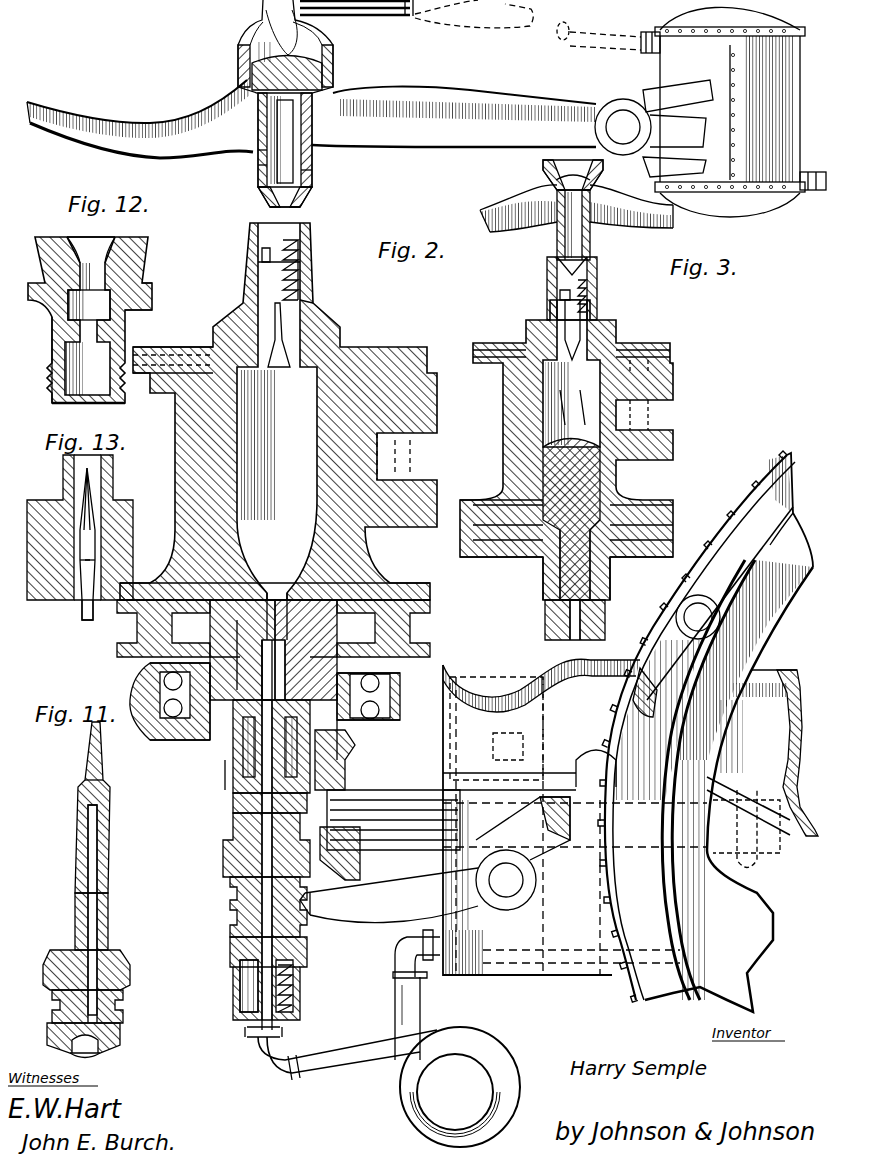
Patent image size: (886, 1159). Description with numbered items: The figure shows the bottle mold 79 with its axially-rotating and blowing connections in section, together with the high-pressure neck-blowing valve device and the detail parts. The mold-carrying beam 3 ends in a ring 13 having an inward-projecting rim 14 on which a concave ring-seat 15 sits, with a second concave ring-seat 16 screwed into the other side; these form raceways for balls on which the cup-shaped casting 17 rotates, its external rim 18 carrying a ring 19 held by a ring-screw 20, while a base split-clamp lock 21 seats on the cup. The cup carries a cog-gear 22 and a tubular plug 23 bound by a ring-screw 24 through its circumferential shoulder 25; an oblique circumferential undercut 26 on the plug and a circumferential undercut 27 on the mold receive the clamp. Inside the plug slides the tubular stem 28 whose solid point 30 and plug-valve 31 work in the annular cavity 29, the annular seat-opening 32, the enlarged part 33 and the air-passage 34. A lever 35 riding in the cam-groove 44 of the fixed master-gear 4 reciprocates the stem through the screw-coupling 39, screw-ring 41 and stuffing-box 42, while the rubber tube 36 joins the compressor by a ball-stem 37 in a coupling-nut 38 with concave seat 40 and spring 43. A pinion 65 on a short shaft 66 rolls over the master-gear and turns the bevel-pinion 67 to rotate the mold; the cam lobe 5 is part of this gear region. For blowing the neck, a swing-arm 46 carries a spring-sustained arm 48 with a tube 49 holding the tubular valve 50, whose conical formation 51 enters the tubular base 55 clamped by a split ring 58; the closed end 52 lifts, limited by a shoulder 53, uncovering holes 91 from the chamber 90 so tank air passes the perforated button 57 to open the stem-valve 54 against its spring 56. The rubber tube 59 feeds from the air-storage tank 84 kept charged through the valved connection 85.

In FIG. 2, the mold-carrying beam 3 is at (630, 817).
In FIG. 2, the master-gear 4 is at (740, 515).
In FIG. 2, the cam lobe 5 is at (791, 510).
In FIG. 2, the ring 13 is at (140, 695).
In FIG. 2, the inward-projecting rim 14 is at (185, 742).
In FIG. 2, the concave ring-seat 15 is at (150, 735).
In FIG. 2, the concave ring-seat 16 is at (150, 665).
In FIG. 2, the cup-shaped casting 17 is at (218, 768).
In FIG. 2, the external rim 18 is at (205, 755).
In FIG. 2, the ring 19 is at (160, 710).
In FIG. 2, the ring-screw 20 is at (160, 682).
In FIG. 2, the base split-clamp lock 21 is at (172, 628).
In FIG. 2, the cog-gear 22 is at (235, 775).
In FIG. 12, the tubular plug 23 is at (160, 230).
In FIG. 2, the tubular plug 23 is at (545, 582).
In FIG. 2, the ring-screw 24 is at (267, 757).
In FIG. 12, the circumferential shoulder 25 is at (150, 305).
In FIG. 2, the circumferential shoulder 25 is at (271, 643).
In FIG. 12, the oblique circumferential undercut 26 is at (152, 285).
In FIG. 2, the oblique circumferential undercut 26 is at (274, 655).
In FIG. 2, the circumferential undercut 27 is at (195, 590).
In FIG. 13, the tubular stem 28 is at (80, 598).
In FIG. 11, the tubular stem 28 is at (108, 905).
In FIG. 2, the tubular stem 28 is at (255, 830).
In FIG. 12, the annular cavity 29 is at (92, 250).
In FIG. 13, the solid point 30 is at (78, 540).
In FIG. 11, the solid point 30 is at (88, 745).
In FIG. 2, the solid point 30 is at (625, 575).
In FIG. 11, the plug-valve 31 is at (85, 783).
In FIG. 12, the annular seat-opening 32 is at (89, 305).
In FIG. 12, the enlarged part 33 is at (52, 325).
In FIG. 2, the enlarged part 33 is at (595, 580).
In FIG. 13, the air-passage 34 is at (80, 570).
In FIG. 11, the air-passage 34 is at (88, 810).
In FIG. 2, the air-passage 34 is at (275, 835).
In FIG. 2, the lever 35 is at (546, 715).
In FIG. 2, the rubber tube 36 is at (345, 1040).
In FIG. 2, the ball-stem 37 is at (232, 950).
In FIG. 2, the coupling-nut 38 is at (240, 995).
In FIG. 11, the screw-coupling 39 is at (123, 1017).
In FIG. 2, the screw-coupling 39 is at (230, 905).
In FIG. 11, the concave seat 40 is at (100, 1058).
In FIG. 2, the concave seat 40 is at (300, 958).
In FIG. 11, the screw-ring 41 is at (130, 972).
In FIG. 2, the screw-ring 41 is at (230, 858).
In FIG. 2, the stuffing-box 42 is at (240, 810).
In FIG. 2, the spring 43 is at (295, 985).
In FIG. 2, the cam-groove 44 is at (718, 858).
In FIG. 3, the swing-arm 46 is at (625, 100).
In FIG. 3, the spring-sustained arm 48 is at (370, 128).
In FIG. 3, the tube 49 is at (260, 175).
In FIG. 2, the tube 49 is at (595, 235).
In FIG. 3, the tubular valve 50 is at (258, 160).
In FIG. 2, the tubular valve 50 is at (560, 240).
In FIG. 3, the conical formation 51 is at (308, 197).
In FIG. 2, the conical formation 51 is at (550, 270).
In FIG. 3, the closed end 52 is at (322, 80).
In FIG. 2, the closed end 52 is at (555, 178).
In FIG. 3, the shoulder 53 is at (312, 178).
In FIG. 2, the stem-valve 54 is at (262, 275).
In FIG. 2, the tubular base 55 is at (315, 310).
In FIG. 2, the spring 56 is at (305, 278).
In FIG. 2, the perforated button 57 is at (262, 255).
In FIG. 2, the split ring 58 is at (175, 350).
In FIG. 3, the rubber tube 59 is at (405, 2).
In FIG. 2, the pinion 65 is at (560, 835).
In FIG. 2, the short shaft 66 is at (350, 815).
In FIG. 2, the bevel-pinion 67 is at (337, 862).
In FIG. 2, the mold 79 is at (195, 422).
In FIG. 3, the air-storage tank 84 is at (723, 112).
In FIG. 3, the valved connection 85 is at (812, 190).
In FIG. 3, the chamber 90 is at (240, 33).
In FIG. 3, the holes 91 is at (258, 90).